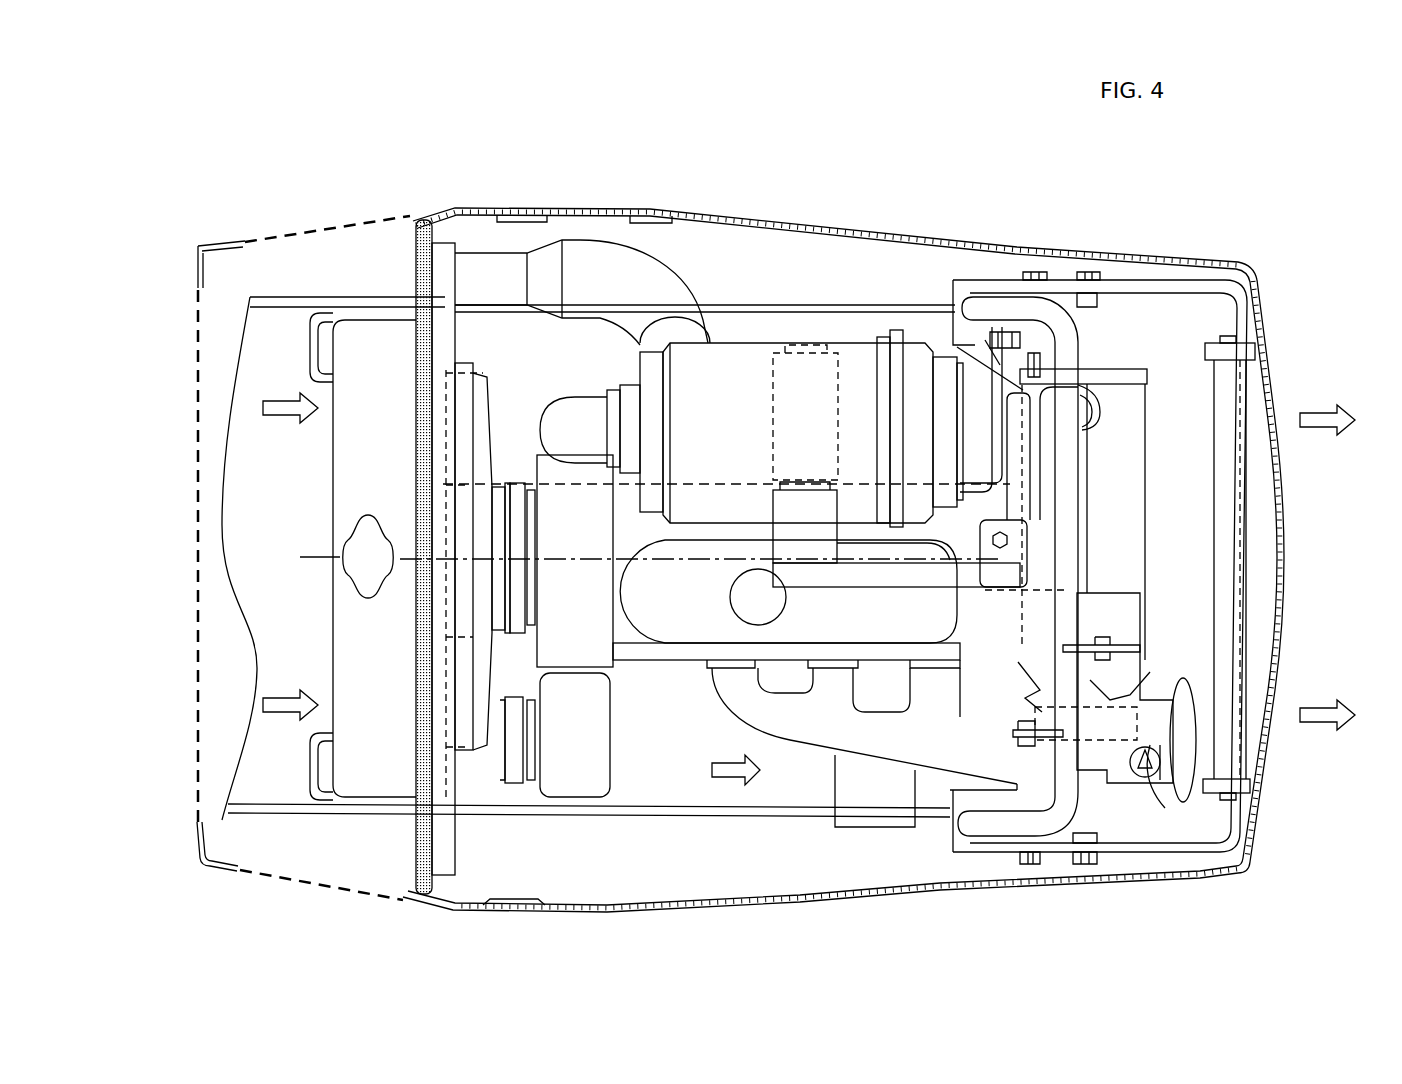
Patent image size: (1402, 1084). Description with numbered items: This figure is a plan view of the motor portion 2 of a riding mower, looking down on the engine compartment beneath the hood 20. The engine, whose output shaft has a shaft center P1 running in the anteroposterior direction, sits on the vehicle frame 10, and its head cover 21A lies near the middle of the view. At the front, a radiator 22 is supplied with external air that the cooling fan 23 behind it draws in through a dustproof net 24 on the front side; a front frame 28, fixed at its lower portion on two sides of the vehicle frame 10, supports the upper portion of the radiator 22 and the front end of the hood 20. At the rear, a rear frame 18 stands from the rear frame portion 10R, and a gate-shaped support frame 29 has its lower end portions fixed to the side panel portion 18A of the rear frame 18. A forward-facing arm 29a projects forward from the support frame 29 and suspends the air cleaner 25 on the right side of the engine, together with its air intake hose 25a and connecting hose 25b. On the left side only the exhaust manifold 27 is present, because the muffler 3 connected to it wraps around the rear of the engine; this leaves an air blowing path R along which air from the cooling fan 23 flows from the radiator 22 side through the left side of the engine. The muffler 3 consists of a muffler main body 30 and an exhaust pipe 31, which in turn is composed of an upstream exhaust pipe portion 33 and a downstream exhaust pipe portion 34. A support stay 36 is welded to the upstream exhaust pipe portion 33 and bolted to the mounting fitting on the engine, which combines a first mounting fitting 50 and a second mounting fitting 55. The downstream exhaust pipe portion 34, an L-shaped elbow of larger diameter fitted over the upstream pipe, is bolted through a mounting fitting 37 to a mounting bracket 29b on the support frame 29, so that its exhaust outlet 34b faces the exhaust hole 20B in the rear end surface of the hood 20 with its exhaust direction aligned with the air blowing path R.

The motor portion 2 is at (962, 240).
The muffler 3 is at (1145, 410).
The vehicle frame 10 is at (755, 815).
The rear frame portion 10R is at (662, 820).
The rear frame 18 is at (1258, 558).
The side panel portion 18A is at (1130, 288).
The hood 20 is at (768, 210).
The exhaust hole 20B is at (1193, 690).
The head cover 21A is at (686, 625).
The radiator 22 is at (343, 462).
The cooling fan 23 is at (416, 670).
The dustproof net 24 is at (200, 603).
The air cleaner 25 is at (745, 350).
The air intake hose 25a is at (605, 252).
The connecting hose 25b is at (560, 420).
The exhaust manifold 27 is at (825, 720).
The front frame 28 is at (1030, 695).
The support frame 29 is at (1068, 333).
The forward-facing arm 29a is at (845, 572).
The mounting bracket 29b is at (1118, 650).
The muffler main body 30 is at (1122, 567).
The exhaust pipe 31 is at (1089, 466).
The upstream exhaust pipe portion 33 is at (1090, 428).
The downstream exhaust pipe portion 34 is at (1127, 753).
The exhaust outlet 34b is at (1178, 720).
The support stay 36 is at (980, 530).
The mounting fitting 37 is at (1140, 655).
The first mounting fitting 50 is at (1015, 500).
The second mounting fitting 55 is at (1010, 345).
The shaft center P1 is at (631, 557).
The air blowing path R is at (740, 752).